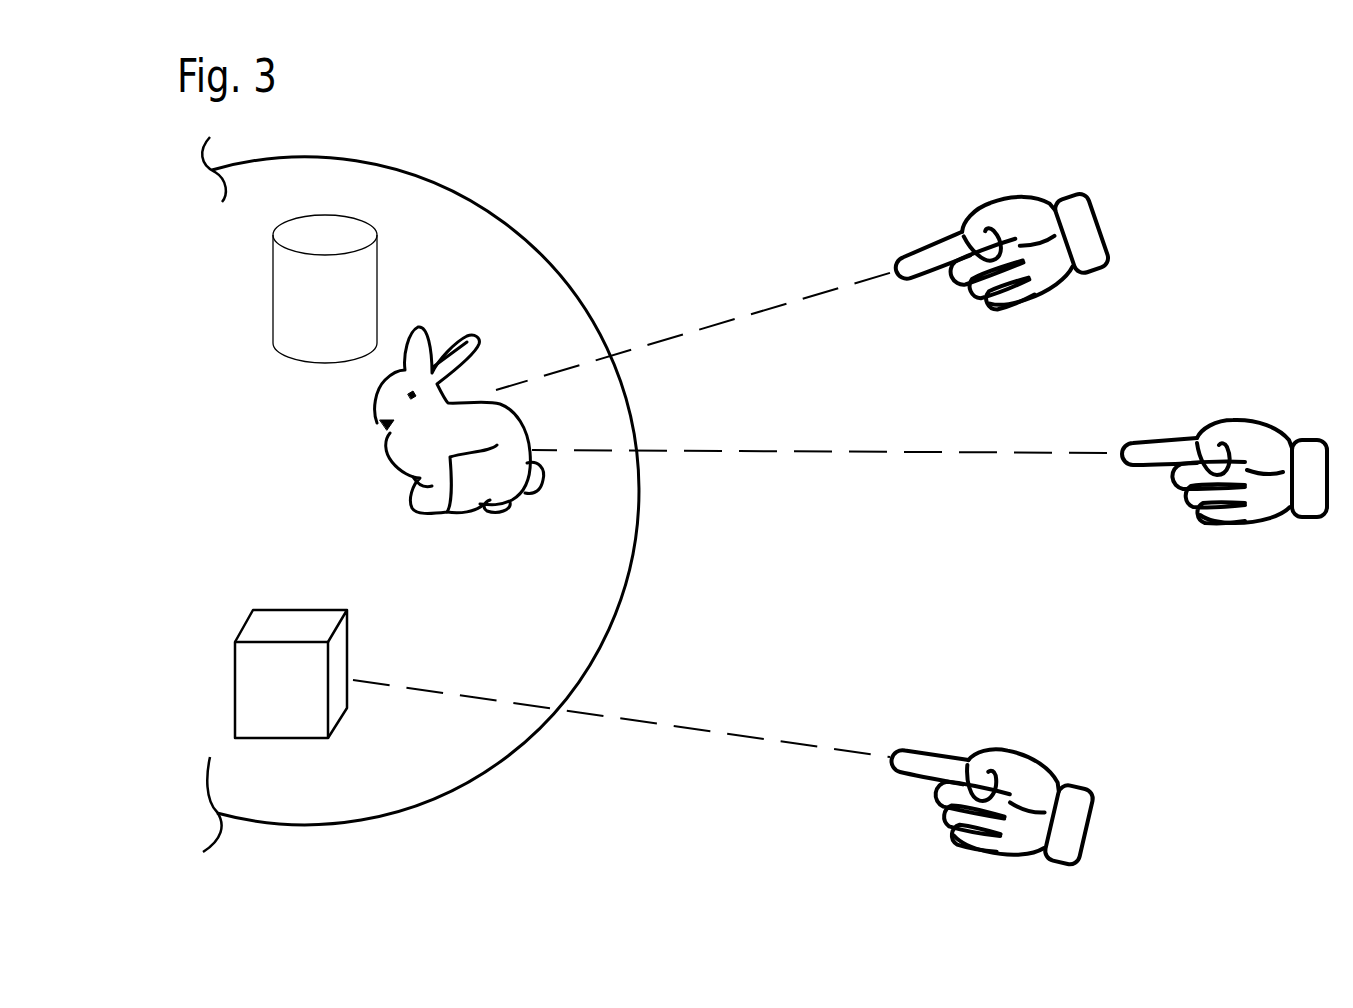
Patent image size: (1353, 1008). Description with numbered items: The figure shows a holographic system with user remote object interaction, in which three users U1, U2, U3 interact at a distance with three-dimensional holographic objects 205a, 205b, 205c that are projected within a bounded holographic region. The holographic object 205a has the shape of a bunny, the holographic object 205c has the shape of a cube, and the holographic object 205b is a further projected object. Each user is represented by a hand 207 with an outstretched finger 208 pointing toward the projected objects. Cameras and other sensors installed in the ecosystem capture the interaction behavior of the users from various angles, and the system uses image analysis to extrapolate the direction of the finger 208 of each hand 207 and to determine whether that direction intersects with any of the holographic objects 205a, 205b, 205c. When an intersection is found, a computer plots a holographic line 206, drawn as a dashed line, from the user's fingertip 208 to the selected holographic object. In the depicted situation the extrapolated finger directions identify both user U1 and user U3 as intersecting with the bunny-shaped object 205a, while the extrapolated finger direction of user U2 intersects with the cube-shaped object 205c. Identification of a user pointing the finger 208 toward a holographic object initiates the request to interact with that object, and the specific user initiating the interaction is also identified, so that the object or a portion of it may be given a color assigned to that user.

The 3D holographic object (bunny) 205a is at (518, 415).
The 3D holographic object 205b is at (368, 227).
The 3D holographic object (cube) 205c is at (330, 610).
The holographic line 206 is at (731, 447).
The hand 207 is at (1213, 506).
The finger 208 is at (1148, 490).
The user U1 is at (1243, 351).
The user U2 is at (993, 690).
The user U3 is at (1032, 160).